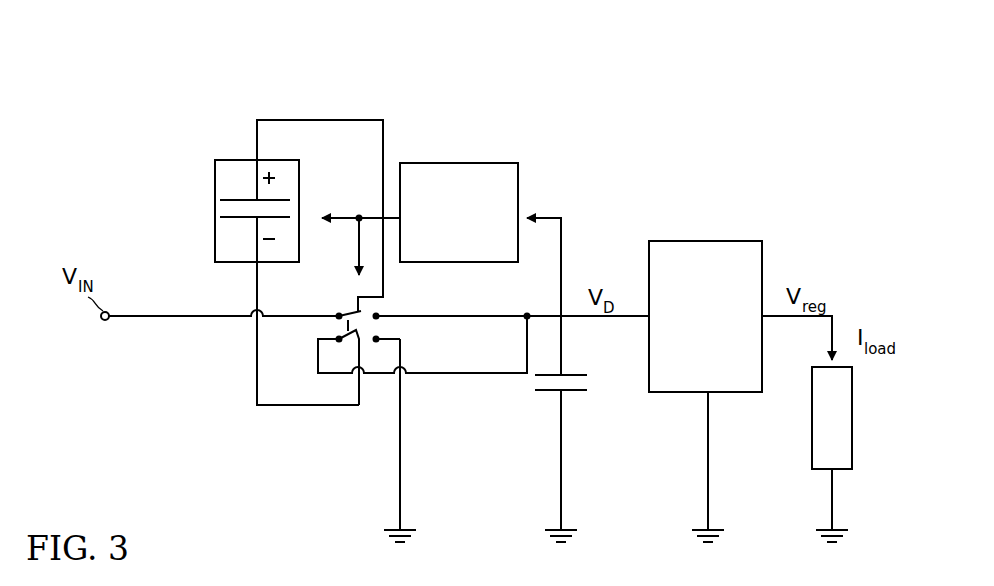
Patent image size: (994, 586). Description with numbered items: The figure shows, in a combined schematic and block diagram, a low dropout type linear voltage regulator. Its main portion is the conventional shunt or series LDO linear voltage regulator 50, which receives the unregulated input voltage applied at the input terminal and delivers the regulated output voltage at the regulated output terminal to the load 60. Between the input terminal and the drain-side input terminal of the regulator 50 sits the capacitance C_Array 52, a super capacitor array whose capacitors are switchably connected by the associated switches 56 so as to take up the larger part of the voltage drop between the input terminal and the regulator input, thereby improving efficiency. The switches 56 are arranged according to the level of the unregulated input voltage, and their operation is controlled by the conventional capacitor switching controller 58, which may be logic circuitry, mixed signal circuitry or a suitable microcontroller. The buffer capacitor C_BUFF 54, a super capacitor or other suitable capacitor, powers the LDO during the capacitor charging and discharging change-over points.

The shunt or series LDO linear voltage regulator 50 is at (727, 241).
The capacitance C_Array 52 is at (227, 160).
The capacitor C_BUFF 54 is at (541, 394).
The switches 56 is at (412, 329).
The capacitor switching controller 58 is at (486, 163).
The load 60 is at (853, 418).